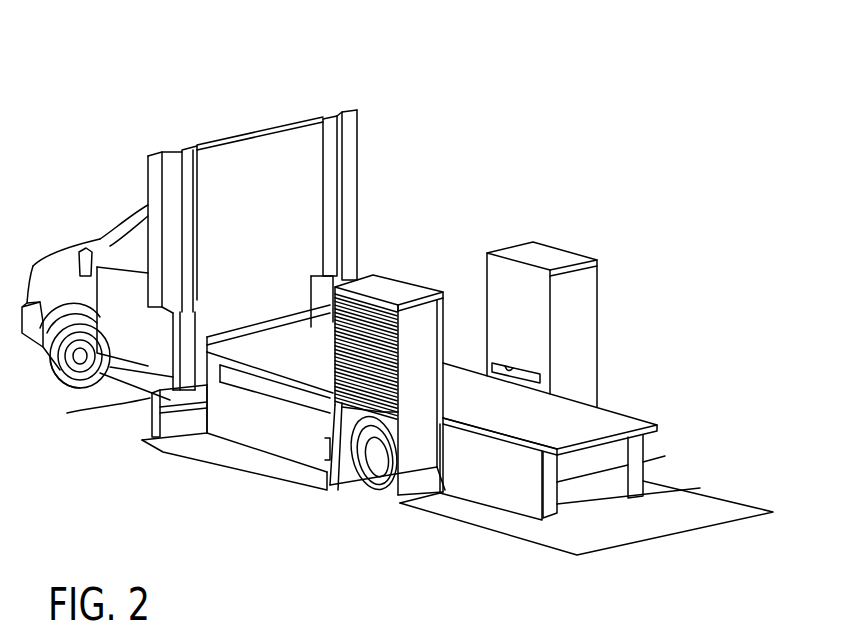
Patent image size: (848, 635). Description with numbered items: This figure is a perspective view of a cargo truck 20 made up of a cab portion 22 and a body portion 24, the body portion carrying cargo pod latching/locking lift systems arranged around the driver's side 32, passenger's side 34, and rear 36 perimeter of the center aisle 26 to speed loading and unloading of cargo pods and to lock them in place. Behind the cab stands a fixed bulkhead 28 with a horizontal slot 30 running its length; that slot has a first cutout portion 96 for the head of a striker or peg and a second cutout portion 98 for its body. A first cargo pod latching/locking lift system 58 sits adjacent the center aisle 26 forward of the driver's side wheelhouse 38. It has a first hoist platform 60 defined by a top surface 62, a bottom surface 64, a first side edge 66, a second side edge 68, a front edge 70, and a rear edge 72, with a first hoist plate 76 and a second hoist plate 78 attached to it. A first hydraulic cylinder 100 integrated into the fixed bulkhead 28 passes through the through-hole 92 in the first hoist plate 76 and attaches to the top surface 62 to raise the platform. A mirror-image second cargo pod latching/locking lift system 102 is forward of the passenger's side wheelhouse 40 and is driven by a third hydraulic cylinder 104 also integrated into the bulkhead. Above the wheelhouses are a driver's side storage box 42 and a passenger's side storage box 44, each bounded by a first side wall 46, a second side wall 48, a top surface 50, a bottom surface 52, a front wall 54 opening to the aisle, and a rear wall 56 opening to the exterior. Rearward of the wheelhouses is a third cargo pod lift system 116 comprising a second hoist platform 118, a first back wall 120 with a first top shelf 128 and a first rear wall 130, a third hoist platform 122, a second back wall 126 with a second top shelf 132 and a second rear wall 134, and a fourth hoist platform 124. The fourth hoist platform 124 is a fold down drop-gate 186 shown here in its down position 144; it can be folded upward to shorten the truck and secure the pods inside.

The cargo truck 20 is at (95, 190).
The cab portion 22 is at (57, 268).
The body portion 24 is at (615, 398).
The center aisle 26 is at (463, 387).
The fixed bulkhead 28 is at (233, 163).
The horizontal slot 30 is at (238, 318).
The driver's side 32 is at (226, 478).
The passenger's side 34 is at (631, 270).
The rear 36 is at (677, 558).
The driver's side wheelhouse 38 is at (343, 443).
The passenger's side wheelhouse 40 is at (505, 367).
The driver's side storage box 42 is at (379, 288).
The passenger's side storage box 44 is at (545, 252).
The first side wall 46 is at (330, 346).
The second side wall 48 is at (421, 330).
The top surface 50 is at (402, 290).
The bottom surface 52 is at (377, 493).
The front wall 54 is at (443, 397).
The rear wall 56 is at (351, 356).
The first cargo pod latching/locking lift system 58 is at (146, 437).
The first hoist platform 60 is at (202, 443).
The top surface 62 is at (218, 447).
The bottom surface 64 is at (265, 467).
The first side edge 66 is at (147, 446).
The second side edge 68 is at (347, 488).
The front edge 70 is at (203, 457).
The rear edge 72 is at (268, 447).
The first hoist plate 76 is at (138, 421).
The second hoist plate 78 is at (323, 468).
The through-hole 92 is at (150, 398).
The first cutout portion 96 is at (220, 330).
The second cutout portion 98 is at (207, 318).
The first hydraulic cylinder 100 is at (187, 176).
The second cargo pod latching/locking lift system 102 is at (318, 307).
The third hydraulic cylinder 104 is at (327, 142).
The third cargo pod lift system 116 is at (526, 547).
The second hoist platform 118 is at (430, 510).
The first back wall 120 is at (500, 480).
The third hoist platform 122 is at (658, 490).
The fourth hoist platform 124 is at (695, 516).
The second back wall 126 is at (647, 452).
The first top shelf 128 is at (492, 434).
The first rear wall 130 is at (551, 498).
The second top shelf 132 is at (634, 428).
The second rear wall 134 is at (633, 480).
The down position 144 is at (753, 500).
The fold down drop-gate 186 is at (778, 503).